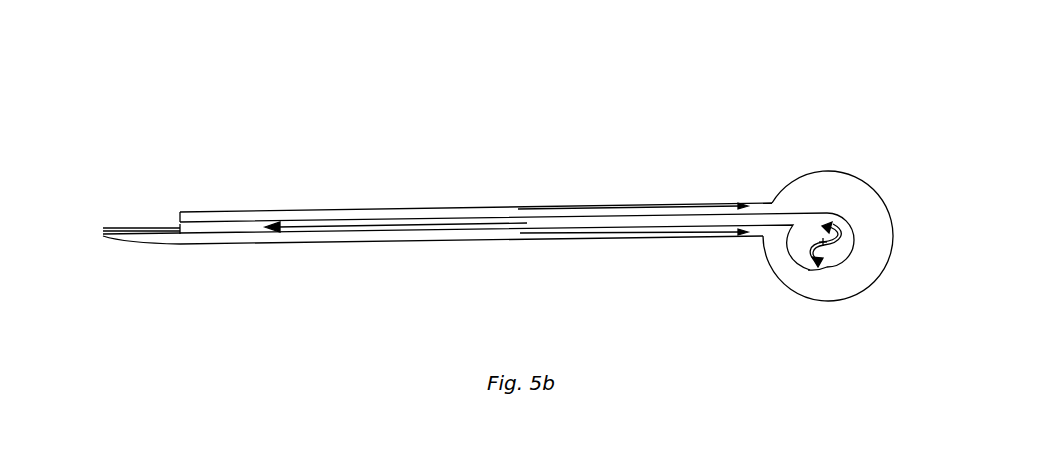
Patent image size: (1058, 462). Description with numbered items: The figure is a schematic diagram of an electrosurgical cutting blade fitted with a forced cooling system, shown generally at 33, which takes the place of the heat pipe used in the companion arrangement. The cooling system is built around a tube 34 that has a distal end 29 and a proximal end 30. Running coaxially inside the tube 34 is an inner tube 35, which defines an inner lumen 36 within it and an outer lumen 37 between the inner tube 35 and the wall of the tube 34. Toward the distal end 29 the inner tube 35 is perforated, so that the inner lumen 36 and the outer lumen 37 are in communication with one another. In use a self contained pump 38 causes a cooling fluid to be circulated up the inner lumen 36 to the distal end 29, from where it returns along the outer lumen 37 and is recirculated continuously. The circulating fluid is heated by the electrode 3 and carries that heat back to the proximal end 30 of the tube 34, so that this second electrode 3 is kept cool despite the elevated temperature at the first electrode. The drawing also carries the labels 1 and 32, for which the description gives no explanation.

The surgical instrument tip 1 is at (106, 209).
The second electrode 3 is at (137, 247).
The distal end 29 is at (208, 249).
The proximal end 30 is at (275, 248).
The distal head 32 is at (808, 194).
The forced cooling system 33 is at (468, 165).
The tube 34 is at (375, 206).
The coaxial inner tube 35 is at (413, 240).
The inner lumen 36 is at (617, 242).
The outer lumen 37 is at (486, 242).
The self contained pump 38 is at (807, 282).